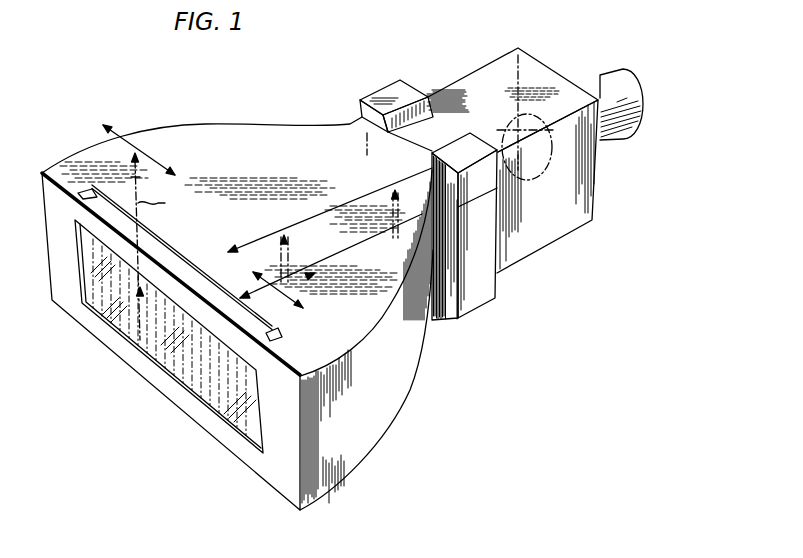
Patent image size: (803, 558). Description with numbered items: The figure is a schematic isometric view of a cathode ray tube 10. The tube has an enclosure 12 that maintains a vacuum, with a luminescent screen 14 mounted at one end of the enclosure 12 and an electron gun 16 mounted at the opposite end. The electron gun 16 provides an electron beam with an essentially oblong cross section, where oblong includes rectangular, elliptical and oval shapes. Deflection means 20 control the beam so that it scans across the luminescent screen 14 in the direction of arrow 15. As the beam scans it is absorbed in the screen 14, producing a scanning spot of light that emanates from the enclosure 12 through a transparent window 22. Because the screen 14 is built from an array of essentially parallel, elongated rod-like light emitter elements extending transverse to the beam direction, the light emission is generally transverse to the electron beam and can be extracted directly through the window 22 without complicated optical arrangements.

The cathode ray tube 10 is at (302, 91).
The enclosure 12 is at (208, 152).
The luminescent screen 14 is at (137, 340).
The arrow 15 is at (288, 303).
The electron gun 16 is at (620, 92).
The deflection means 20 is at (378, 98).
The transparent window 22 is at (175, 262).